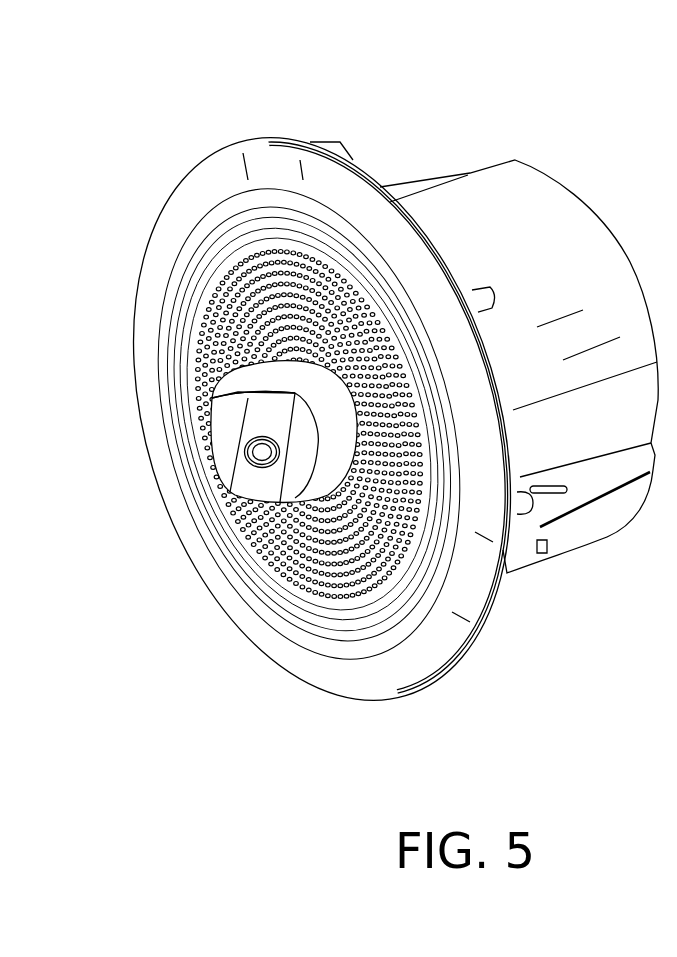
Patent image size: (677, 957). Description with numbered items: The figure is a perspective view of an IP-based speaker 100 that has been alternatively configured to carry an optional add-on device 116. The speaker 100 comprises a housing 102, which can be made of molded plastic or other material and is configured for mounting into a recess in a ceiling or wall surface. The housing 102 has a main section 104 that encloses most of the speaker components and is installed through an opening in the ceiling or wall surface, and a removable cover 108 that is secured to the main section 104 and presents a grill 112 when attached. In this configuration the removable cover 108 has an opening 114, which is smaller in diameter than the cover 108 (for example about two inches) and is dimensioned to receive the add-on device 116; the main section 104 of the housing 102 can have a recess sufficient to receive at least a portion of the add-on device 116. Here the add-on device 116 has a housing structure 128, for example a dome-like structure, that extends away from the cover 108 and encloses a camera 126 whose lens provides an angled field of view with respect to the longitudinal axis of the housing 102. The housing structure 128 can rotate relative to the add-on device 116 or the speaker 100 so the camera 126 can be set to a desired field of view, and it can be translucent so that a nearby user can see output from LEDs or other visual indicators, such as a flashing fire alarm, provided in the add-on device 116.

The IP-based speaker 100 is at (345, 420).
The housing 102 is at (468, 173).
The main section 104 is at (523, 222).
The removable cover 108 is at (185, 197).
The grill 112 is at (343, 568).
The opening 114 is at (332, 503).
The add-on device 116 is at (255, 488).
The camera 126 is at (156, 510).
The housing structure 128 is at (248, 383).